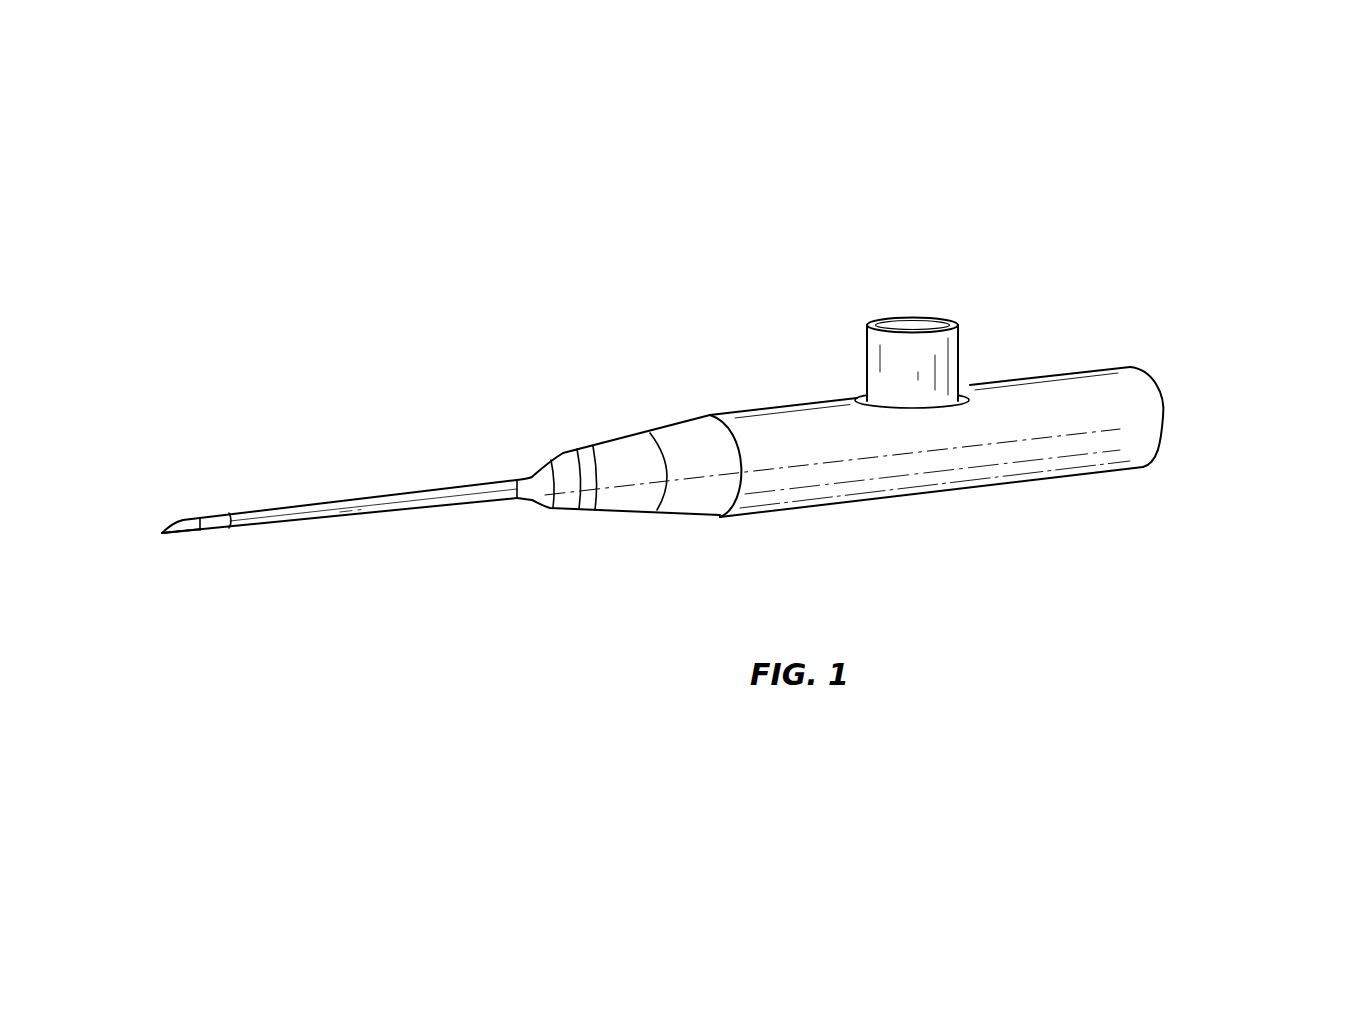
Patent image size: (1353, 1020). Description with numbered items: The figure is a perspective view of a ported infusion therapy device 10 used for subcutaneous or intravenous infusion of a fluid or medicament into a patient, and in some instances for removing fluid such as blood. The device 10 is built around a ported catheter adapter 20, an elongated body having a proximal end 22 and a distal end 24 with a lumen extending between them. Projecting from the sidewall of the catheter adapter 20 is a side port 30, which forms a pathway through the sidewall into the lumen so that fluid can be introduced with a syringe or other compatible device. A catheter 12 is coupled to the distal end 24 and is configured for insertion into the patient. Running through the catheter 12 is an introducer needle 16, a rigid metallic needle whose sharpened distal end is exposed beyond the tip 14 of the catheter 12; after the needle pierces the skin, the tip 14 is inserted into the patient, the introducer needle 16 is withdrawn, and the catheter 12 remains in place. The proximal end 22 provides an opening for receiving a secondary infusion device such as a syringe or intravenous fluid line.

The ported infusion therapy device 10 is at (1162, 218).
The catheter 12 is at (353, 508).
The tip 14 is at (218, 528).
The introducer needle 16 is at (178, 533).
The ported catheter adapter 20 is at (1120, 443).
The proximal end 22 is at (1163, 413).
The distal end 24 is at (563, 505).
The side port 30 is at (957, 355).